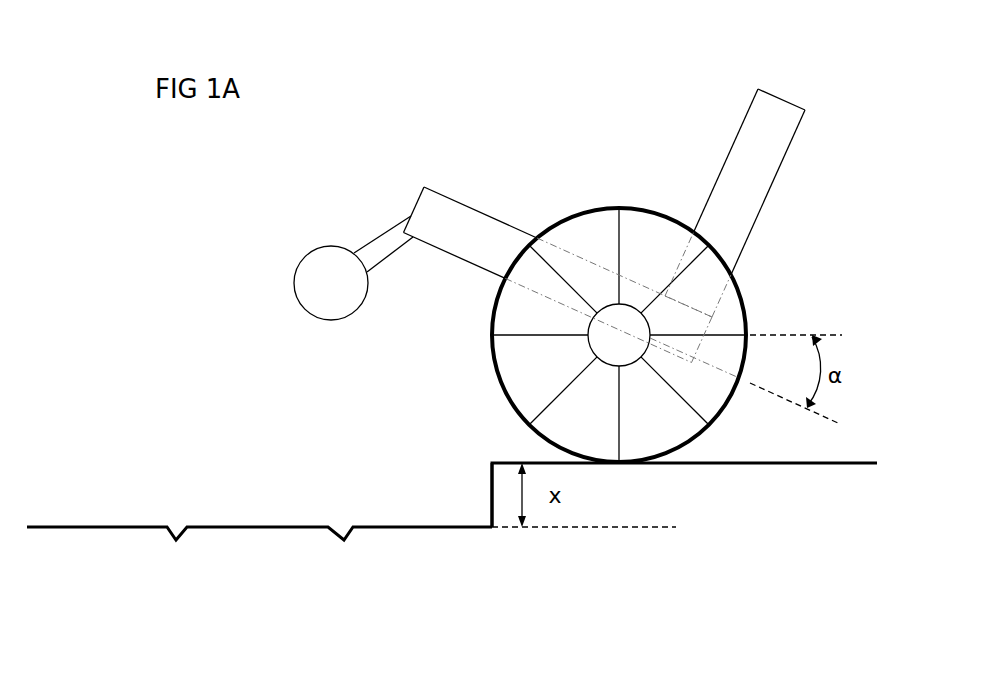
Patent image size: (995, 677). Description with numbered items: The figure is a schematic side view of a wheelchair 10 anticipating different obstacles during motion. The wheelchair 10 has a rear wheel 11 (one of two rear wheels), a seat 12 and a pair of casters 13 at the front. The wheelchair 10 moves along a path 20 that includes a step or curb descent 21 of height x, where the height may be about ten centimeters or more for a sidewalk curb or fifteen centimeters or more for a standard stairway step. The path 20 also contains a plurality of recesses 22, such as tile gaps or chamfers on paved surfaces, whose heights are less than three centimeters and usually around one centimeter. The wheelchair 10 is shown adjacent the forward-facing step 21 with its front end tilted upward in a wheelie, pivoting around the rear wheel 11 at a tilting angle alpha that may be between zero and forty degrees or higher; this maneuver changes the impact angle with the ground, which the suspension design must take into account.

The wheelchair 10 is at (571, 111).
The rear wheel 11 is at (497, 383).
The seat 12 is at (508, 225).
The casters 13 is at (297, 258).
The path 20 is at (762, 464).
The step or curb descent 21 is at (492, 505).
The recesses 22 is at (338, 533).